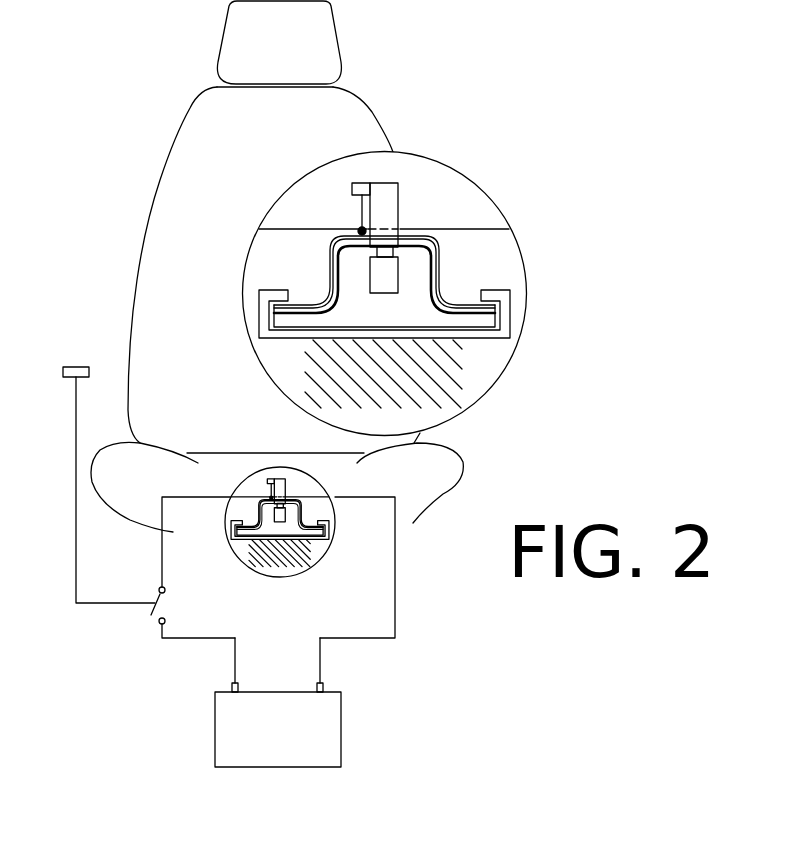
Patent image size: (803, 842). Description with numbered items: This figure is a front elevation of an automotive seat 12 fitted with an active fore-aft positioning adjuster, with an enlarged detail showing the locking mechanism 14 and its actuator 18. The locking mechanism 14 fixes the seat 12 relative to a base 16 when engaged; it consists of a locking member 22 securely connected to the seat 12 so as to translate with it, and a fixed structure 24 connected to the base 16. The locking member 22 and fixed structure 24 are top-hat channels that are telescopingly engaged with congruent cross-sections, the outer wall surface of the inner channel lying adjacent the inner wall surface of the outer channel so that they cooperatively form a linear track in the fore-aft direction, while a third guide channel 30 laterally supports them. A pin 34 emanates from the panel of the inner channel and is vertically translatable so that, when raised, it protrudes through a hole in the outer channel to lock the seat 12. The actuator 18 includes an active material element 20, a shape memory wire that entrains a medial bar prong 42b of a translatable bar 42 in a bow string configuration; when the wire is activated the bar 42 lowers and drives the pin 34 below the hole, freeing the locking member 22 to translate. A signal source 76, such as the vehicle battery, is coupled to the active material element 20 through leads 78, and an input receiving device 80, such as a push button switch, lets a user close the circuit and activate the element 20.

The automotive seat 12 is at (130, 129).
The locking mechanism 14 is at (358, 556).
The base 16 is at (484, 394).
The actuator 18 is at (304, 487).
The active material element 20 is at (362, 208).
The locking member 22 is at (428, 240).
The fixed structure 24 is at (497, 310).
The third guide channel 30 is at (466, 390).
The pin 34 is at (400, 272).
The translatable bar 42 is at (398, 198).
The medial bar prong 42b is at (352, 188).
The signal source 76 is at (297, 746).
The leads 78 is at (357, 640).
The input receiving device 80 is at (62, 371).